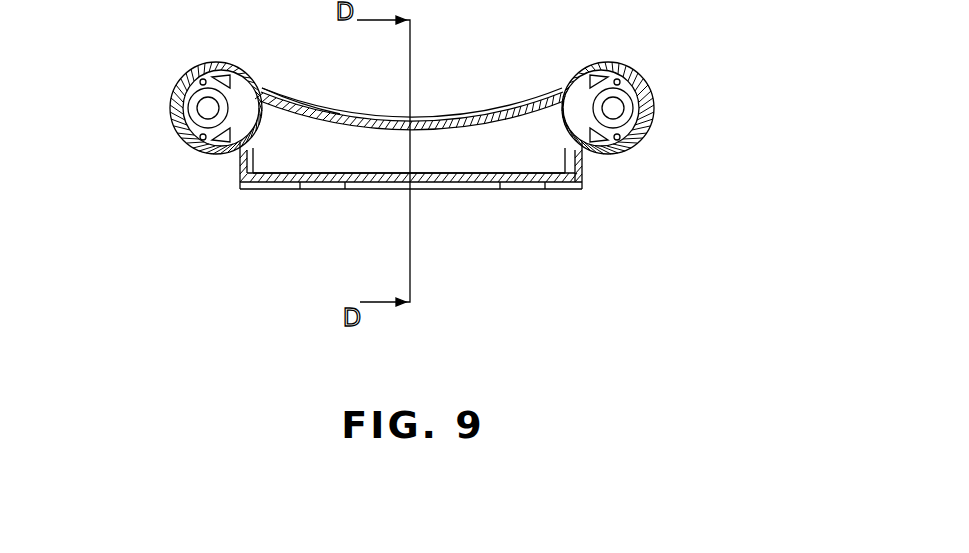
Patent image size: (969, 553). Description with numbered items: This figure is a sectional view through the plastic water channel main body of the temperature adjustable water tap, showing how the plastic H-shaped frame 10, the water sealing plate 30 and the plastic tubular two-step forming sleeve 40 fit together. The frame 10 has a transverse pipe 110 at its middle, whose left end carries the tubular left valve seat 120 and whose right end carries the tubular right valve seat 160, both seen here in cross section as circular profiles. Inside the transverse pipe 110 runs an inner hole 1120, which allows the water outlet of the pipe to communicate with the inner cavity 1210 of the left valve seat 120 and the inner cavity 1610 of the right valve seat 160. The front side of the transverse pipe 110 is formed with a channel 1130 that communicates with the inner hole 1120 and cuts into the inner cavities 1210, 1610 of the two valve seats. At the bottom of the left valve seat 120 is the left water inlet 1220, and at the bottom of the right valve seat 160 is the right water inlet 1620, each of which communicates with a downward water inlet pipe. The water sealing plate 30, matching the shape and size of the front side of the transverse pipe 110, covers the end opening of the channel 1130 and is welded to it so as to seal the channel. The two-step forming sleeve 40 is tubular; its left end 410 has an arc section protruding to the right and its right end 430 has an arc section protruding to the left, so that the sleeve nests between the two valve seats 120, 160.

The plastic H-shaped frame 10 is at (176, 91).
The left valve seat 120 is at (172, 110).
The left water inlet 1220 is at (203, 106).
The inner cavity of the left valve seat 1210 is at (230, 127).
The right valve seat 160 is at (643, 117).
The inner cavity of the right valve seat 1610 is at (607, 72).
The right water inlet 1620 is at (608, 107).
The transverse pipe 110 is at (438, 112).
The inner hole 1120 is at (487, 112).
The channel 1130 is at (491, 152).
The left end of the two-step forming sleeve 410 is at (273, 94).
The right end of the two-step forming sleeve 430 is at (557, 192).
The water sealing plate 30 is at (243, 190).
The two-step forming sleeve 40 is at (398, 186).